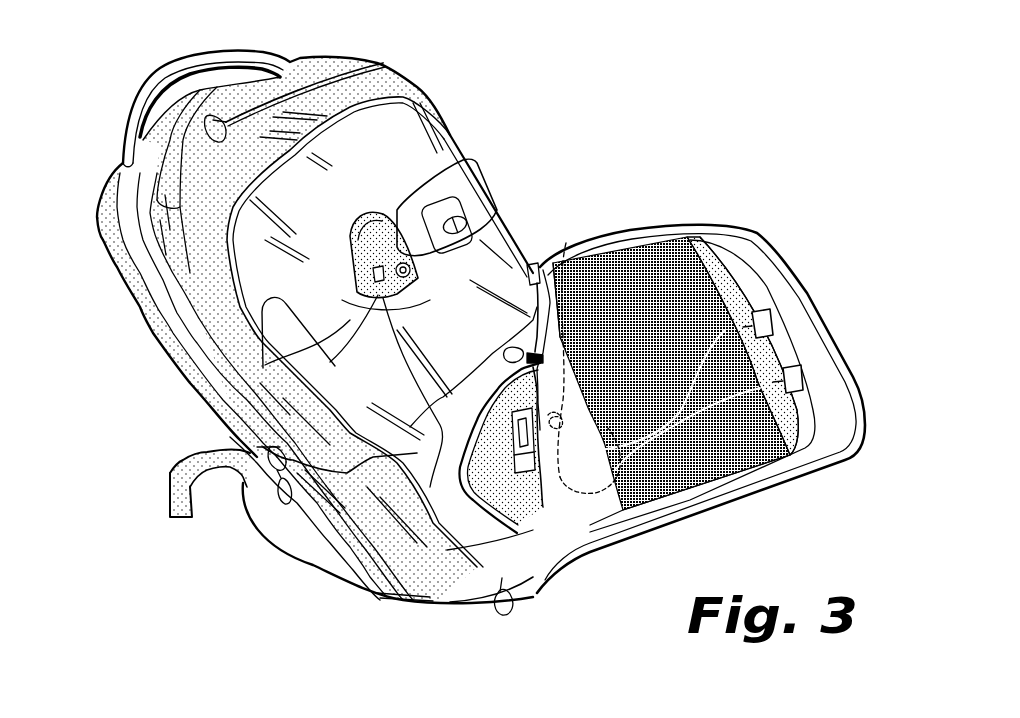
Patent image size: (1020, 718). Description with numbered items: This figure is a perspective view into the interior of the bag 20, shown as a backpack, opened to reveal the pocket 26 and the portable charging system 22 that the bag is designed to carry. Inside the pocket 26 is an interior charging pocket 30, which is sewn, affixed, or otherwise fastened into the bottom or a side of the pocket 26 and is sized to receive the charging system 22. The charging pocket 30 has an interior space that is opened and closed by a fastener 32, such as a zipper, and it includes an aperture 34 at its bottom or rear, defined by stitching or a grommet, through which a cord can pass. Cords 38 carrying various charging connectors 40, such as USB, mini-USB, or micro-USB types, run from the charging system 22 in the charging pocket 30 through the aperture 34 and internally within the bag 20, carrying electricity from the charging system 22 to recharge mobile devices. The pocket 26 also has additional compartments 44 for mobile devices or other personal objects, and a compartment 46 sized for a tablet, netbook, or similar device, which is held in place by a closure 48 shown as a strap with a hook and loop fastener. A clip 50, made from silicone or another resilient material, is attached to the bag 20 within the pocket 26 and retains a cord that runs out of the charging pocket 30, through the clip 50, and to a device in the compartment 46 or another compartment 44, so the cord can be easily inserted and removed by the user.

The bag 20 is at (315, 327).
The portable charging system 22 is at (701, 422).
The pocket 26 is at (458, 257).
The interior charging pocket 30 is at (431, 466).
The fastener 32 is at (489, 424).
The aperture 34 is at (585, 343).
The cord 38 is at (608, 501).
The charging connector 40 is at (793, 330).
The additional compartment 44 is at (253, 358).
The compartment 46 is at (451, 193).
The closure 48 is at (385, 221).
The clip 50 is at (489, 215).